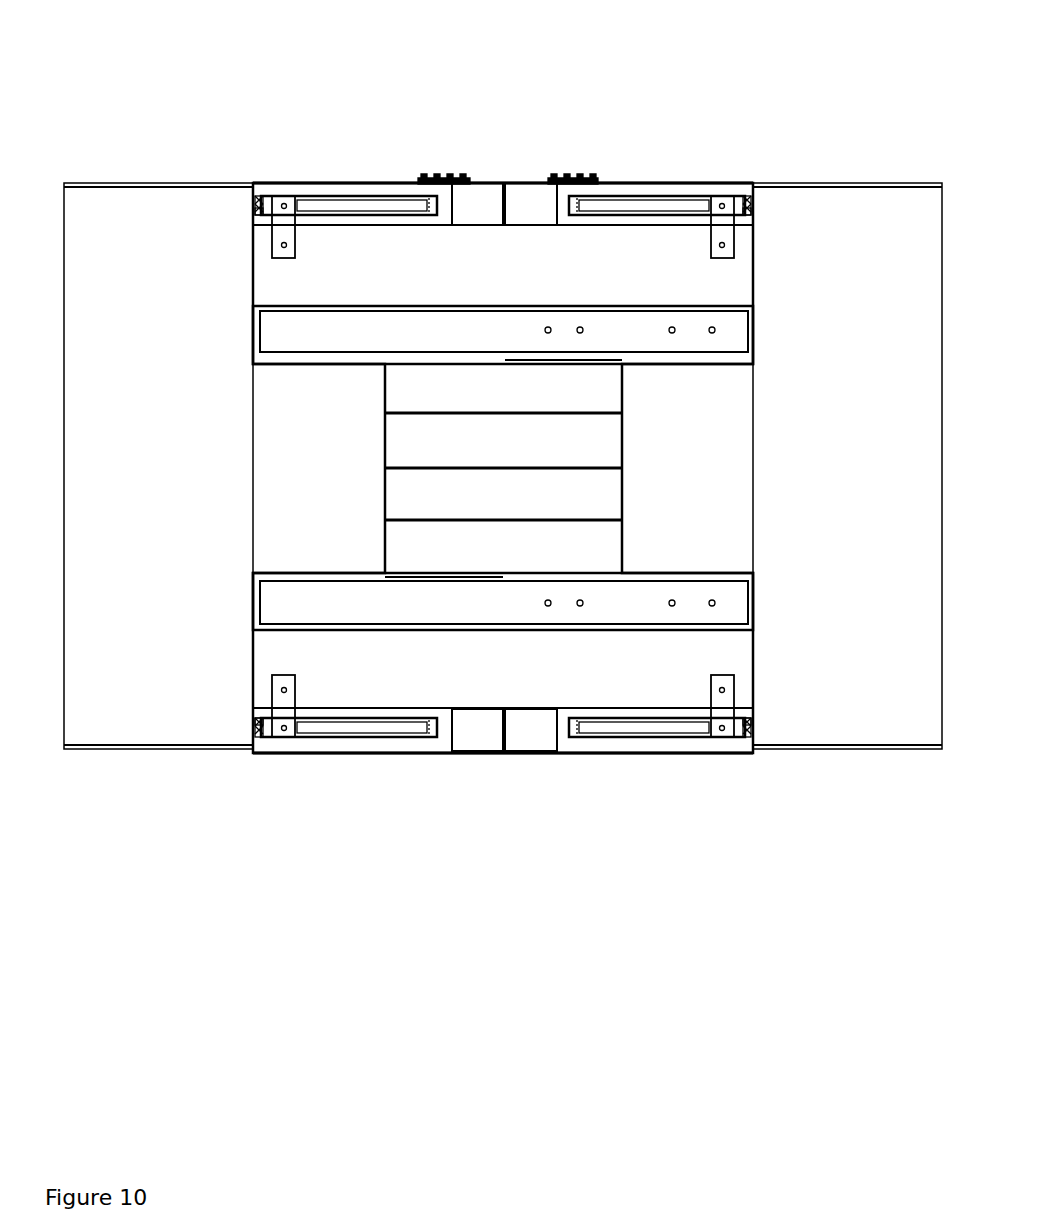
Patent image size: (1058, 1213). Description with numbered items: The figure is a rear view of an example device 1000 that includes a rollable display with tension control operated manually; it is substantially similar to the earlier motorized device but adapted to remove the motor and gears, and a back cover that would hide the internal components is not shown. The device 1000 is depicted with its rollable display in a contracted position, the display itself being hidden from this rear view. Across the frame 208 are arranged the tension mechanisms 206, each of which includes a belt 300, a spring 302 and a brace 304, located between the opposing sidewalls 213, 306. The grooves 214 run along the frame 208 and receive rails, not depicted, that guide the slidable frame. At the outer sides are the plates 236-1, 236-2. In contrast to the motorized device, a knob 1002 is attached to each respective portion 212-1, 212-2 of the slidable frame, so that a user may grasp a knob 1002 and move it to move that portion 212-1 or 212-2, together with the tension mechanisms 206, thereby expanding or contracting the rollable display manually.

The device 1000 is at (896, 106).
The knob 1002 is at (422, 176).
The tension mechanism 206 is at (357, 183).
The frame 208 is at (483, 268).
The portion of the slidable frame 212-1 is at (488, 188).
The portion of the slidable frame 212-2 is at (528, 188).
The opposing sidewall 213 is at (409, 185).
The groove 214 is at (480, 342).
The plate 236-1 is at (173, 478).
The plate 236-2 is at (748, 475).
The belt 300 is at (343, 198).
The spring 302 is at (258, 195).
The brace 304 is at (289, 196).
The opposing sidewall 306 is at (257, 213).